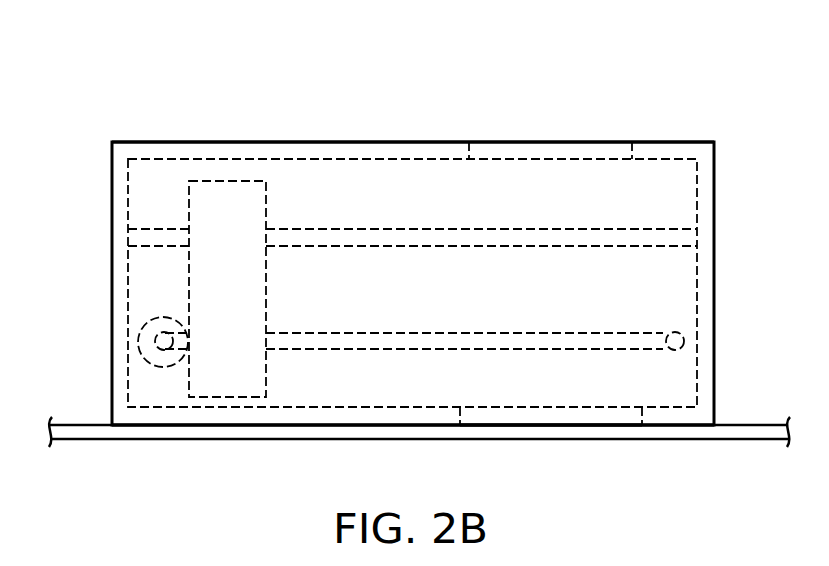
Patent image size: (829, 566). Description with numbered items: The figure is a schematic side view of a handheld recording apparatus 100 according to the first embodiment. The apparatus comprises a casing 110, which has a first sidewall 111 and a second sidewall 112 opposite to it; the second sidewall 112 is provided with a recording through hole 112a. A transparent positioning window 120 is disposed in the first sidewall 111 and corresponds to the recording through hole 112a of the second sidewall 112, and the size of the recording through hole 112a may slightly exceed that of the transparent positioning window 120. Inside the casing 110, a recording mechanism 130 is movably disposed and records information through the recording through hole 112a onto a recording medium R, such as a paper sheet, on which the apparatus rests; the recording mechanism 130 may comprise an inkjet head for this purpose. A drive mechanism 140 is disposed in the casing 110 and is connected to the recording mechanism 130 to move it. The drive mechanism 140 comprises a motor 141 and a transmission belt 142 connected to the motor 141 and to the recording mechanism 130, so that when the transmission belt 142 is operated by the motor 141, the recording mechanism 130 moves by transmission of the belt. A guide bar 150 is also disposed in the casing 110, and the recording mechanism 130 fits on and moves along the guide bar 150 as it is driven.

The handheld recording apparatus 100 is at (165, 120).
The casing 110 is at (111, 177).
The first sidewall 111 is at (343, 141).
The second sidewall 112 is at (389, 427).
The recording through hole 112a is at (551, 410).
The transparent positioning window 120 is at (550, 150).
The recording mechanism 130 is at (202, 262).
The drive mechanism 140 is at (141, 325).
The motor 141 is at (135, 346).
The transmission belt 142 is at (635, 333).
The guide bar 150 is at (657, 236).
The recording medium R is at (758, 424).